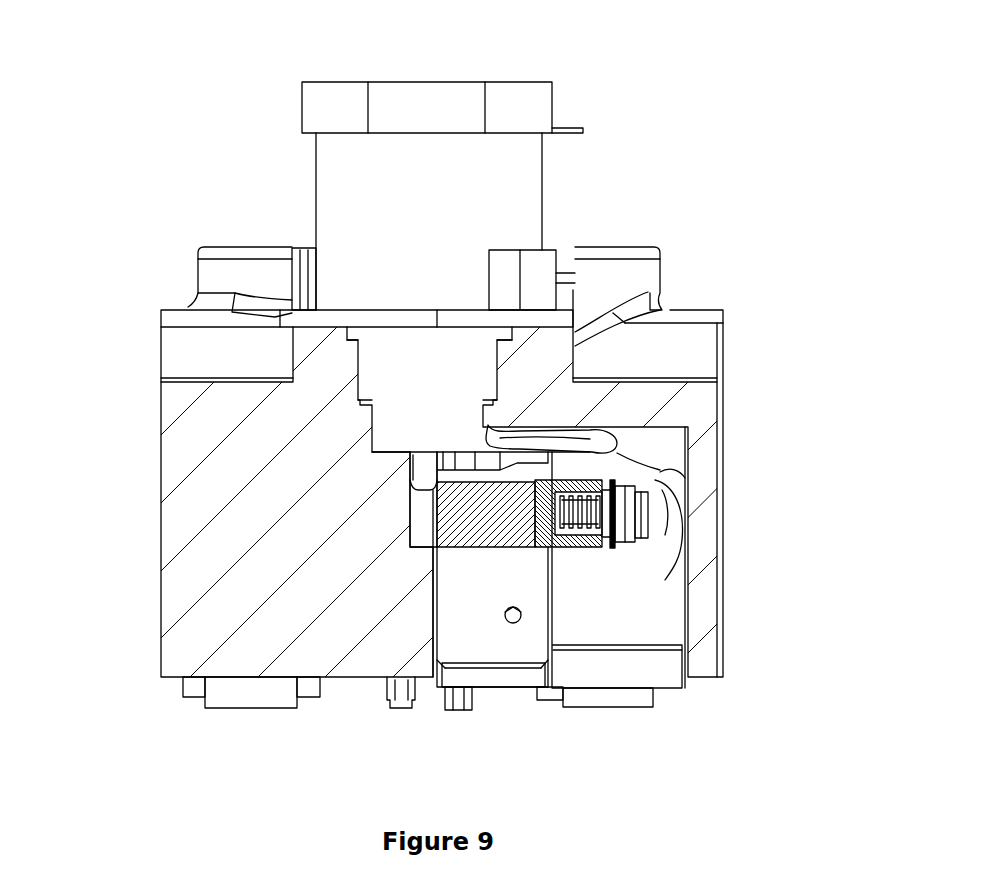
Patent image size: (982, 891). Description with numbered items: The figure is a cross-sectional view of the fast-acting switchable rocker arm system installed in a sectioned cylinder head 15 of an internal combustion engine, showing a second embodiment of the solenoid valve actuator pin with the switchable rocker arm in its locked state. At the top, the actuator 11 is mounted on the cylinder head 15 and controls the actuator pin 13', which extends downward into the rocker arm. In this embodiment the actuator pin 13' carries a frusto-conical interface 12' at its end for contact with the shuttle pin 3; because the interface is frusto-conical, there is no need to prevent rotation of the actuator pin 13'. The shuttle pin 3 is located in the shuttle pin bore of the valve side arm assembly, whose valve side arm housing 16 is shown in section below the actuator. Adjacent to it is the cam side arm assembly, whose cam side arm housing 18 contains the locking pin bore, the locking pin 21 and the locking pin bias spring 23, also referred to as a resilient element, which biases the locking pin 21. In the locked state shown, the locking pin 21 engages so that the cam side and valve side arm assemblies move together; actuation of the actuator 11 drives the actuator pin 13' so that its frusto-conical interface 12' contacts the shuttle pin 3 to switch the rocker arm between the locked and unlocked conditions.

The actuator 11 is at (425, 105).
The cylinder head 15 is at (183, 468).
The actuator pin 13' is at (257, 507).
The frusto-conical interface 12' is at (257, 538).
The locking pin 21 is at (560, 547).
The locking pin bias spring 23 is at (640, 478).
The cam side arm housing 18 is at (668, 590).
The valve side arm housing 16 is at (518, 635).
The shuttle pin 3 is at (473, 547).